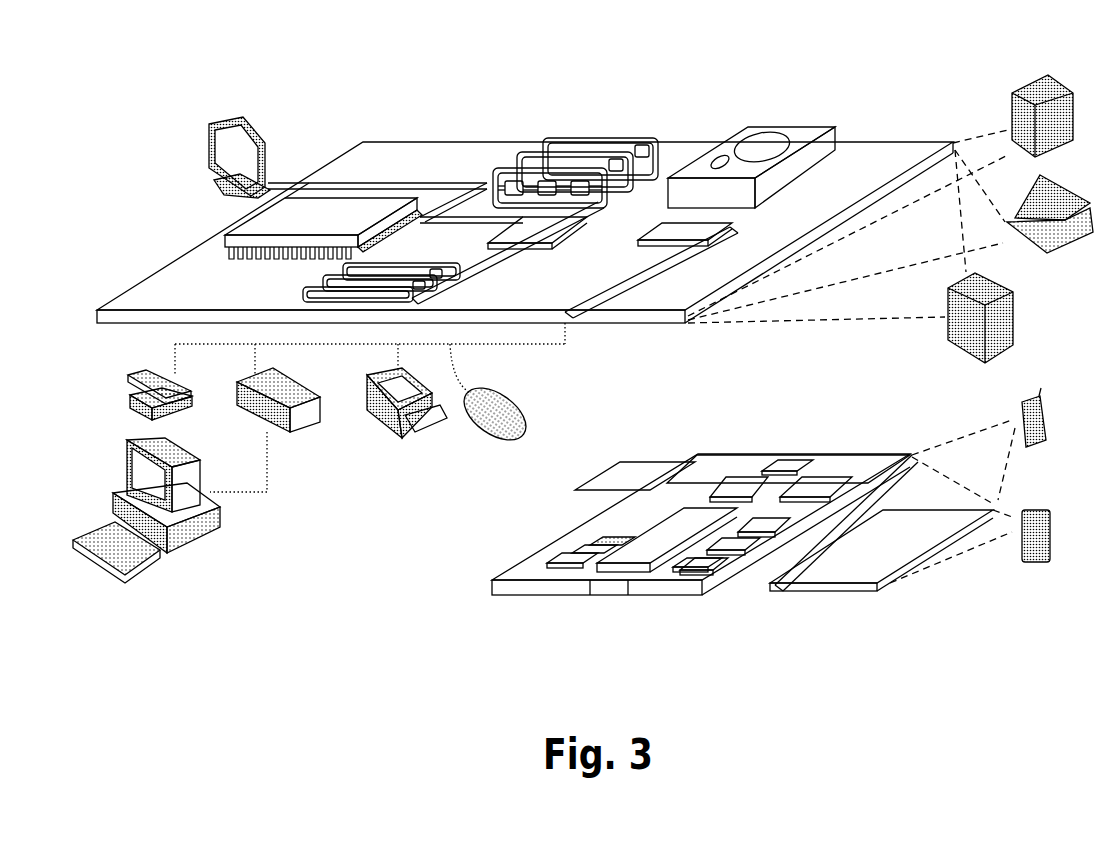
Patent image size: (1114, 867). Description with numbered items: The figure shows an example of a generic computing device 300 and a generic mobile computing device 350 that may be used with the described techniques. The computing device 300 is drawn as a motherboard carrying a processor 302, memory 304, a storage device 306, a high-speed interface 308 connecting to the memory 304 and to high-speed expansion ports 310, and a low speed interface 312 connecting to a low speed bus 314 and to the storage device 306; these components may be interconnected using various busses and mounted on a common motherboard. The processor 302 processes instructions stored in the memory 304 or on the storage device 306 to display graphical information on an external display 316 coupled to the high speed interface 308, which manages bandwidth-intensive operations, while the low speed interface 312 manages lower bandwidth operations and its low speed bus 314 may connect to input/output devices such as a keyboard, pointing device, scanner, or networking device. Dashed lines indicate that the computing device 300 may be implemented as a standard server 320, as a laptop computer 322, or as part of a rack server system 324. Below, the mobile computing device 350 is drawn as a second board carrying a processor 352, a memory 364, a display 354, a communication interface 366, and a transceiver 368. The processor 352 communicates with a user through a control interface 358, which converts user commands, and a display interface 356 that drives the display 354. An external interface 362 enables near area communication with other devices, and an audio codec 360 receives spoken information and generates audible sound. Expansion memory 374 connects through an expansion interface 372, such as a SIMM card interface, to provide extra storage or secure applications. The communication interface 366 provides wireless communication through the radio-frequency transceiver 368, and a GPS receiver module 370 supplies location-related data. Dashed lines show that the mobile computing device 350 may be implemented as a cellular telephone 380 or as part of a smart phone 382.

The computing device 300 is at (178, 40).
The processor 302 is at (242, 226).
The memory 304 is at (586, 140).
The storage device 306 is at (756, 130).
The high-speed interface 308 is at (544, 246).
The high-speed expansion ports 310 is at (304, 290).
The low speed interface 312 is at (662, 223).
The low speed bus 314 is at (568, 300).
The display 316 is at (211, 121).
The standard server 320 is at (1022, 90).
The laptop computer 322 is at (1072, 240).
The rack server system 324 is at (1013, 322).
The mobile computing device 350 is at (455, 610).
The processor 352 is at (646, 537).
The display 354 is at (928, 510).
The display interface 356 is at (715, 578).
The control interface 358 is at (790, 555).
The audio codec 360 is at (790, 525).
The external interface 362 is at (612, 597).
The memory 364 is at (572, 553).
The communication interface 366 is at (735, 475).
The transceiver 368 is at (815, 474).
The GPS receiver module 370 is at (790, 457).
The expansion interface 372 is at (697, 455).
The expansion memory 374 is at (626, 462).
The cellular telephone 380 is at (1020, 403).
The smart phone 382 is at (1040, 512).